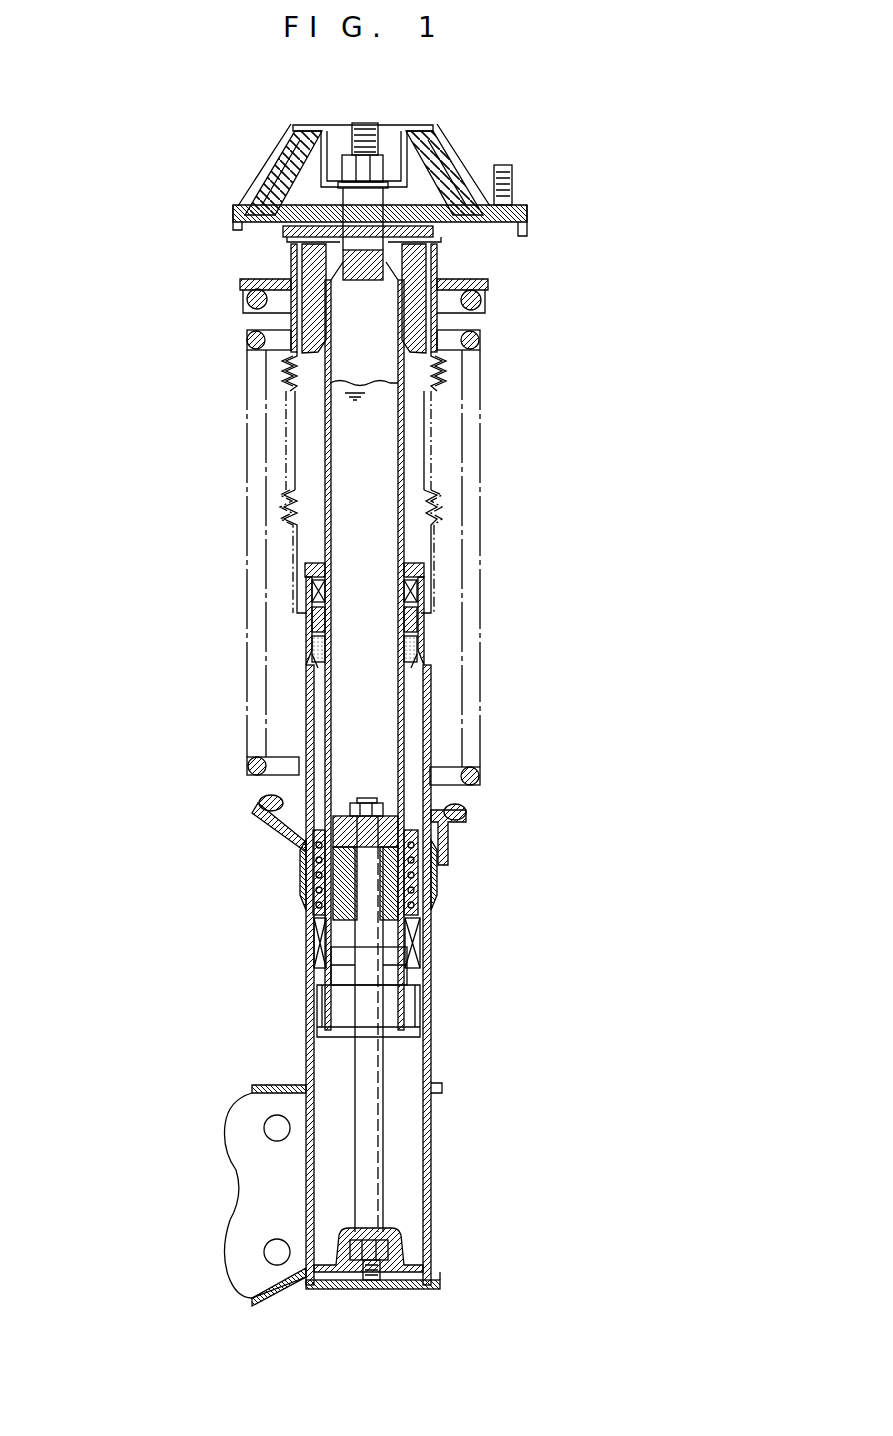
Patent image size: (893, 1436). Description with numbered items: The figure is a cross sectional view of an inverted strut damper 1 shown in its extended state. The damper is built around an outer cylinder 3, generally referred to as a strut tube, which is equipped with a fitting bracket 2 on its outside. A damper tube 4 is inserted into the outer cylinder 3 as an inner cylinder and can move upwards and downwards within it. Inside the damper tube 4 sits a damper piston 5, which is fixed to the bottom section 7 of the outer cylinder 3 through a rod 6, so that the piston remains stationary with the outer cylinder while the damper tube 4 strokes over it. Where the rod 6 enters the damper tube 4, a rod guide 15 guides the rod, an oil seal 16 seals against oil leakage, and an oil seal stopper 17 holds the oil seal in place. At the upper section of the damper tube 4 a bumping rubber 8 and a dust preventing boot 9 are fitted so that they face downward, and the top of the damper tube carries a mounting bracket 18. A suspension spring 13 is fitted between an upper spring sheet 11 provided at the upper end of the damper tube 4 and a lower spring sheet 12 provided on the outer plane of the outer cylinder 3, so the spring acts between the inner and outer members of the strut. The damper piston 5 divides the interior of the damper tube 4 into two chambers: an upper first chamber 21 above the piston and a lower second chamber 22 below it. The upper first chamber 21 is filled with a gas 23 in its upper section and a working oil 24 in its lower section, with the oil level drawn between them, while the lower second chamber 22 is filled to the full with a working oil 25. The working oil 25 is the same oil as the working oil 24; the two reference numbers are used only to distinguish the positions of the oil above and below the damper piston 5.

The inverted strut damper 1 is at (138, 453).
The fitting bracket 2 is at (238, 1187).
The outer cylinder 3 is at (429, 1001).
The damper tube 4 is at (405, 478).
The damper piston 5 is at (385, 814).
The rod 6 is at (385, 1155).
The bottom section 7 is at (400, 1235).
The bumping rubber 8 is at (437, 372).
The dust preventing boot 9 is at (437, 530).
The upper spring sheet 11 is at (258, 282).
The lower spring sheet 12 is at (297, 830).
The suspension spring 13 is at (247, 555).
The rod guide 15 is at (400, 875).
The oil seal 16 is at (315, 933).
The oil seal stopper 17 is at (412, 923).
The mounting bracket 18 is at (463, 161).
The upper first chamber 21 is at (355, 712).
The lower second chamber 22 is at (305, 880).
The gas 23 is at (353, 357).
The working oil 24 is at (353, 398).
The working oil 25 is at (305, 855).